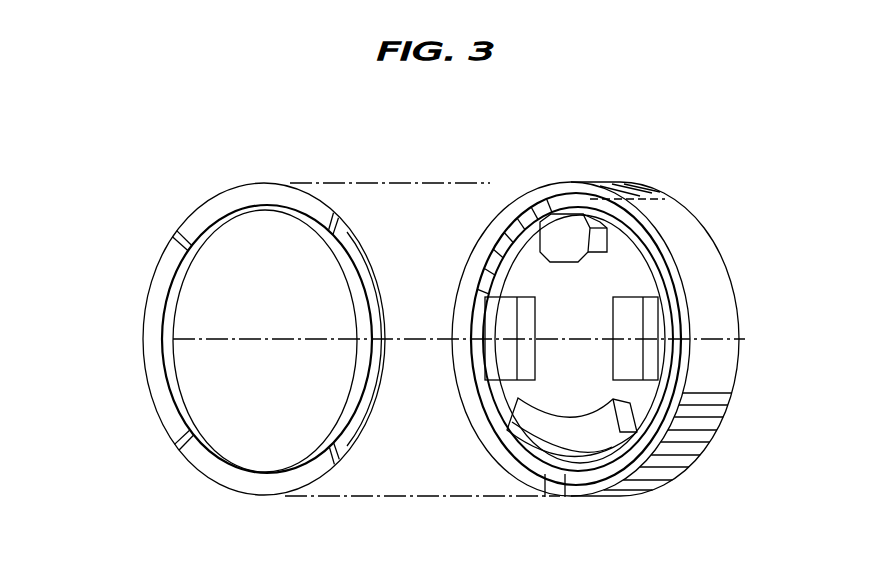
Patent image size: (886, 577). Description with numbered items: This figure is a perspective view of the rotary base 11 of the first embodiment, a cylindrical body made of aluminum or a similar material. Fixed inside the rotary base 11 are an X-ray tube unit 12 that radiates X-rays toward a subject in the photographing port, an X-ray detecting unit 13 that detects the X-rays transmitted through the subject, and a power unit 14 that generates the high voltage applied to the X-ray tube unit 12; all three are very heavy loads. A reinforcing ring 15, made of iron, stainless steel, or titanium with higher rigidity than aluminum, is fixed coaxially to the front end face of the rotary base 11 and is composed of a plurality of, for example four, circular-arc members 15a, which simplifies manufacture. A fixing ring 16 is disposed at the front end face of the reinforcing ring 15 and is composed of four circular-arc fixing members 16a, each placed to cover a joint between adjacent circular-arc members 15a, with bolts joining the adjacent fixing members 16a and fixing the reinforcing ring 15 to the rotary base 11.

The rotary base 11 is at (682, 228).
The X-ray tube unit 12 is at (549, 220).
The X-ray detecting unit 13 is at (558, 460).
The power unit 14 is at (492, 320).
The reinforcing ring 15 is at (625, 344).
The circular-arc member 15a is at (503, 204).
The fixing ring 16 is at (239, 365).
The circular-arc fixing member 16a is at (212, 207).